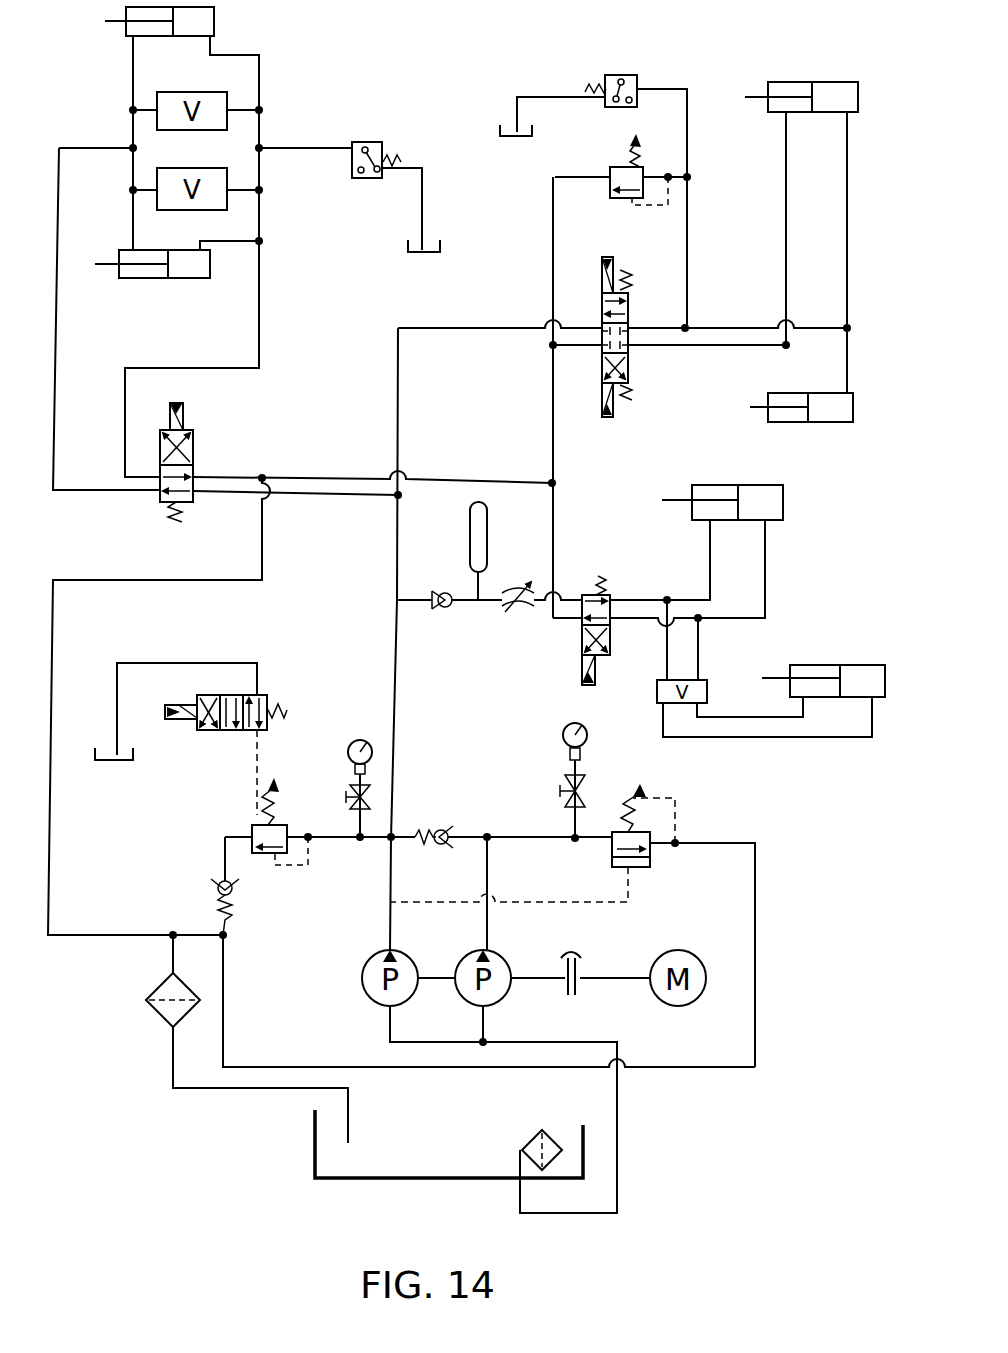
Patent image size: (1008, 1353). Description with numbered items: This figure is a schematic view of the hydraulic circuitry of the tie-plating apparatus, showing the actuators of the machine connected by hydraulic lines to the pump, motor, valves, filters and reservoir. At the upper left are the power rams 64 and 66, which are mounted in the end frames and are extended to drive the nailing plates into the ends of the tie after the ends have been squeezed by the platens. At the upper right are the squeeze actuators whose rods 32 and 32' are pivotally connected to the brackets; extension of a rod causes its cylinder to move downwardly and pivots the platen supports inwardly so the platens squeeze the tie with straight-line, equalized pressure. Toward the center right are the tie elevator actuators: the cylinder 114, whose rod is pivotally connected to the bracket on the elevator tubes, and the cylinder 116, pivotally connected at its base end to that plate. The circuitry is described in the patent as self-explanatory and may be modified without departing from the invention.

The power ram 66 is at (207, 25).
The power ram 64 is at (193, 272).
The rod 32 is at (825, 123).
The rod 32' is at (826, 436).
The cylinder 114 is at (765, 499).
The cylinder 116 is at (850, 675).